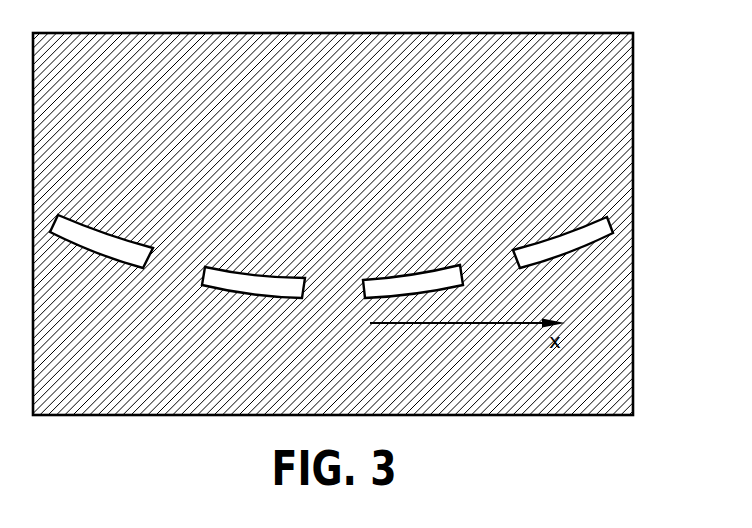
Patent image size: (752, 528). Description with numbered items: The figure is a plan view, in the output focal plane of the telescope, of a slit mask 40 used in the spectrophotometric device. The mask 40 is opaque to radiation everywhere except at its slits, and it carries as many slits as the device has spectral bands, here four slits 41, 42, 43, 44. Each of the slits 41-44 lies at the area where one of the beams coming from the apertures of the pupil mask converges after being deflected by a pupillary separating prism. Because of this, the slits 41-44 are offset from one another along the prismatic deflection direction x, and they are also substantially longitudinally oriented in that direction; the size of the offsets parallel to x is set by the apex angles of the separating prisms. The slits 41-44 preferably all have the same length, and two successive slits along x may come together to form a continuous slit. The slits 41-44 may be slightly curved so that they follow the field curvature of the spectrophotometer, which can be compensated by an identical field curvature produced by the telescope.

The slit mask 40 is at (636, 81).
The slit 41 is at (84, 223).
The slit 42 is at (232, 265).
The slit 43 is at (440, 270).
The slit 44 is at (580, 225).